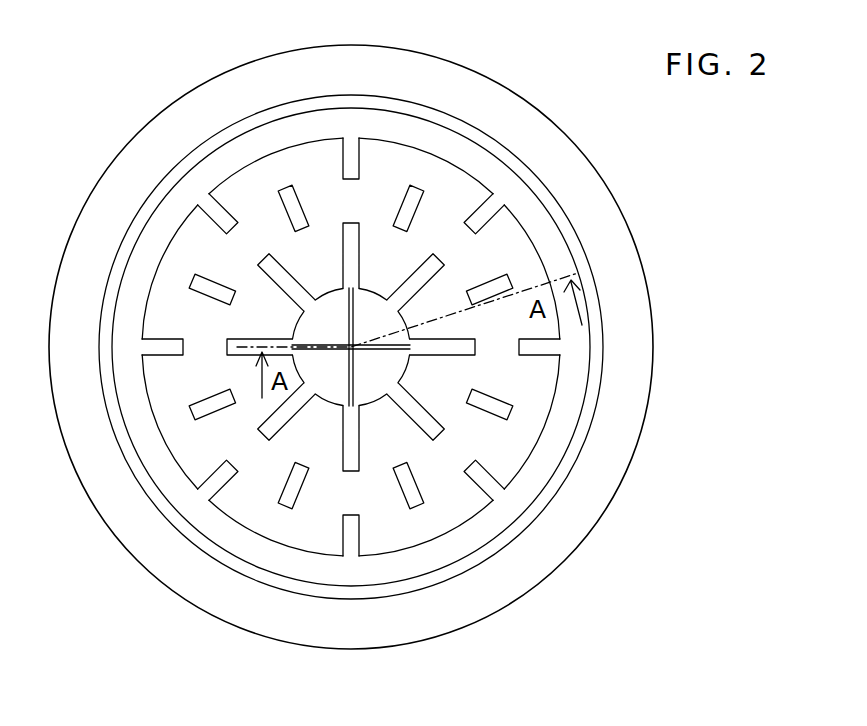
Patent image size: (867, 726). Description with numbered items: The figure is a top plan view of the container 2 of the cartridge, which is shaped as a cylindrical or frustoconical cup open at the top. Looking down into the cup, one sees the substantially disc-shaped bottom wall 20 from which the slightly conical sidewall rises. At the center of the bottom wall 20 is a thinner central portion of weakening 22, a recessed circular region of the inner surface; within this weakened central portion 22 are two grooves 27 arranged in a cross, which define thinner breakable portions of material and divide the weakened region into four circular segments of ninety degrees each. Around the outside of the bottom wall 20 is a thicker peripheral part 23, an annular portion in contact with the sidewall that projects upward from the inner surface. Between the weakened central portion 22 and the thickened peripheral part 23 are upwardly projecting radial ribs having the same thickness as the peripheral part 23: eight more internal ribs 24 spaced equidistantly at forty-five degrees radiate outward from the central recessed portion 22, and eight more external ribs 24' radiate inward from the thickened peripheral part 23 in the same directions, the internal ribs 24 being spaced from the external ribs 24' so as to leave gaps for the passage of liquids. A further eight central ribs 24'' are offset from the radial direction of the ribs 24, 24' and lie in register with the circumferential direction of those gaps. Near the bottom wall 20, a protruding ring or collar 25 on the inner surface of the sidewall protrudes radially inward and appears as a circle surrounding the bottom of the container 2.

The container 2 is at (141, 113).
The bottom wall 20 is at (535, 402).
The central portion of weakening 22 is at (370, 390).
The thicker peripheral part 23 is at (547, 452).
The more internal ribs 24 is at (428, 286).
The more external ribs 24' is at (351, 291).
The central ribs 24'' is at (447, 338).
The protruding ring or collar 25 is at (190, 535).
The grooves 27 is at (310, 342).